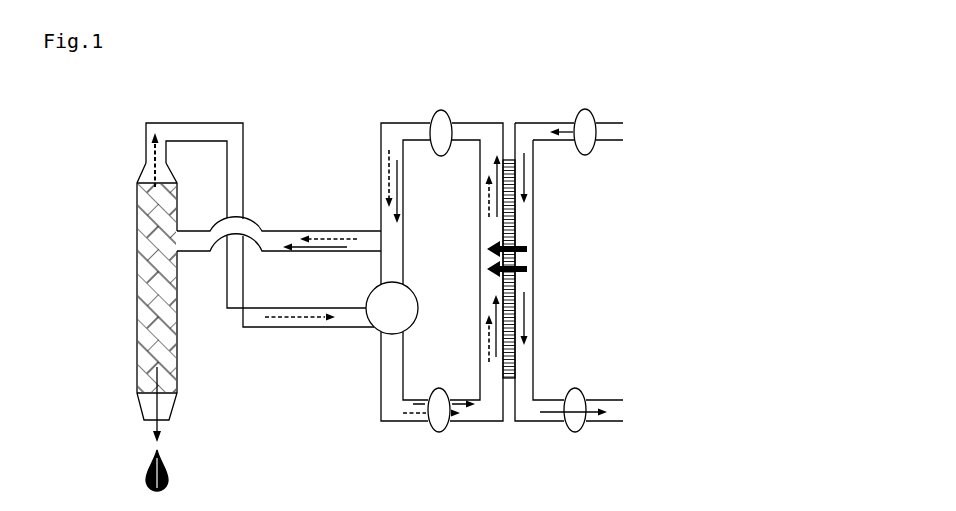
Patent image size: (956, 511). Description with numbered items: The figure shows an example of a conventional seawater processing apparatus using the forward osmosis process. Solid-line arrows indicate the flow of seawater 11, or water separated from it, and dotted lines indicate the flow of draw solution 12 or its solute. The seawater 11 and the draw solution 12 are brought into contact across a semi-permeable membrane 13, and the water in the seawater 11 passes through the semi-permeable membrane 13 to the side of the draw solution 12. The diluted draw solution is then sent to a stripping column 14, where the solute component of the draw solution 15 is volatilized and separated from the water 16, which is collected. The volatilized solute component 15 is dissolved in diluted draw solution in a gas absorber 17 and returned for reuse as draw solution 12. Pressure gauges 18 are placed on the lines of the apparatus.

The seawater 11 is at (613, 132).
The draw solution 12 is at (485, 203).
The semi-permeable membrane 13 is at (513, 229).
The stripping column 14 is at (140, 257).
The solute component of the draw solution 15 is at (147, 163).
The water 16 is at (168, 470).
The gas absorber 17 is at (410, 297).
The pressure gauge 18 is at (440, 115).